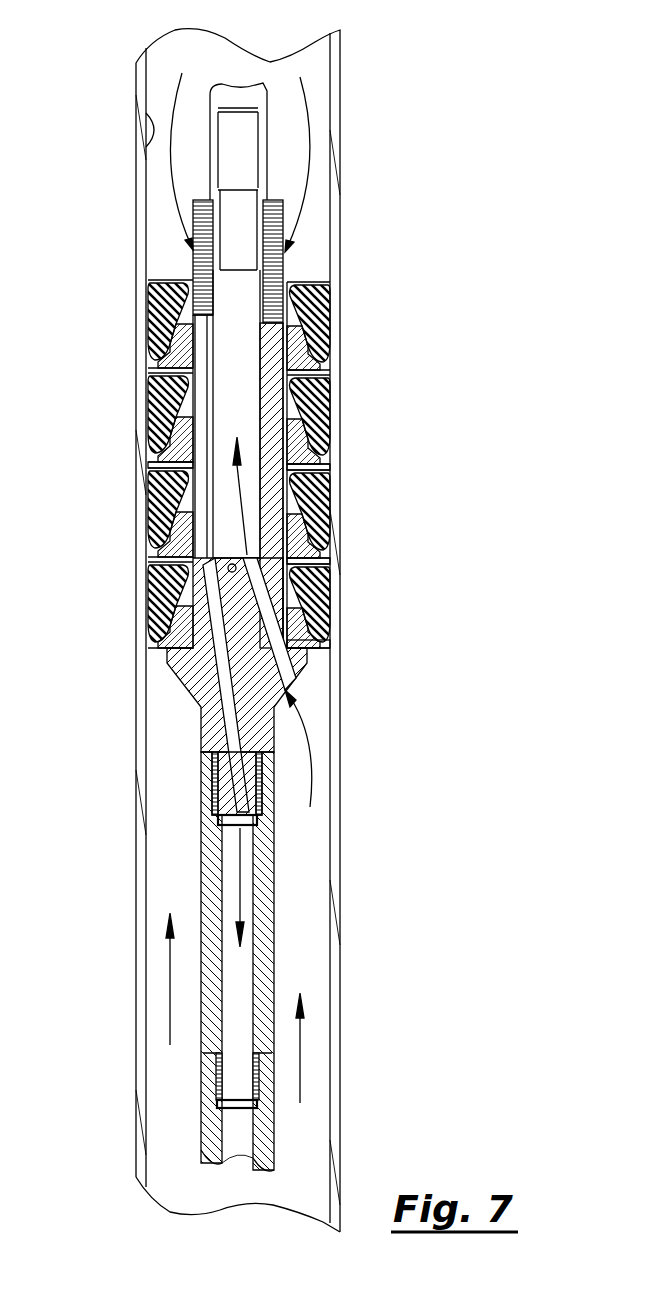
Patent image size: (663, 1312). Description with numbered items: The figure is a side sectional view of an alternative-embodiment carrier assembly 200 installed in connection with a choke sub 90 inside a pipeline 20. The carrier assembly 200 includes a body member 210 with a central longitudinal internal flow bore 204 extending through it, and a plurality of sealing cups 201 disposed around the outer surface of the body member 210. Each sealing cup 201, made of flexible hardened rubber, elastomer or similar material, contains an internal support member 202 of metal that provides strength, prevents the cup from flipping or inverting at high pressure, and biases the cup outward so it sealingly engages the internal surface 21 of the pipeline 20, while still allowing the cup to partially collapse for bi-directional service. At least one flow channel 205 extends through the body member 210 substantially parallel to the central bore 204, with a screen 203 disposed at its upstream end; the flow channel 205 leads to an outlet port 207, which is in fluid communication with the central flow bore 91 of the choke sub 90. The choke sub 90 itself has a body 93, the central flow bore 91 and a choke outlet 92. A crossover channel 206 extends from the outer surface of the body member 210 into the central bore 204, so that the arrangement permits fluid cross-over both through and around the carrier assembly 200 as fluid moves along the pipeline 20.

The pipeline 20 is at (337, 90).
The internal surface of pipeline 21 is at (140, 108).
The choke sub 90 is at (281, 946).
The central flow bore 91 is at (243, 993).
The choke outlet 92 is at (222, 1110).
The body 93 is at (203, 997).
The carrier assembly 200 is at (333, 443).
The sealing cup 201 is at (157, 300).
The internal support member 202 is at (170, 448).
The screen 203 is at (283, 227).
The central longitudinal internal flow bore 204 is at (244, 378).
The flow channel 205 is at (203, 415).
The crossover channel 206 is at (283, 683).
The outlet port 207 is at (233, 828).
The body member 210 is at (325, 518).